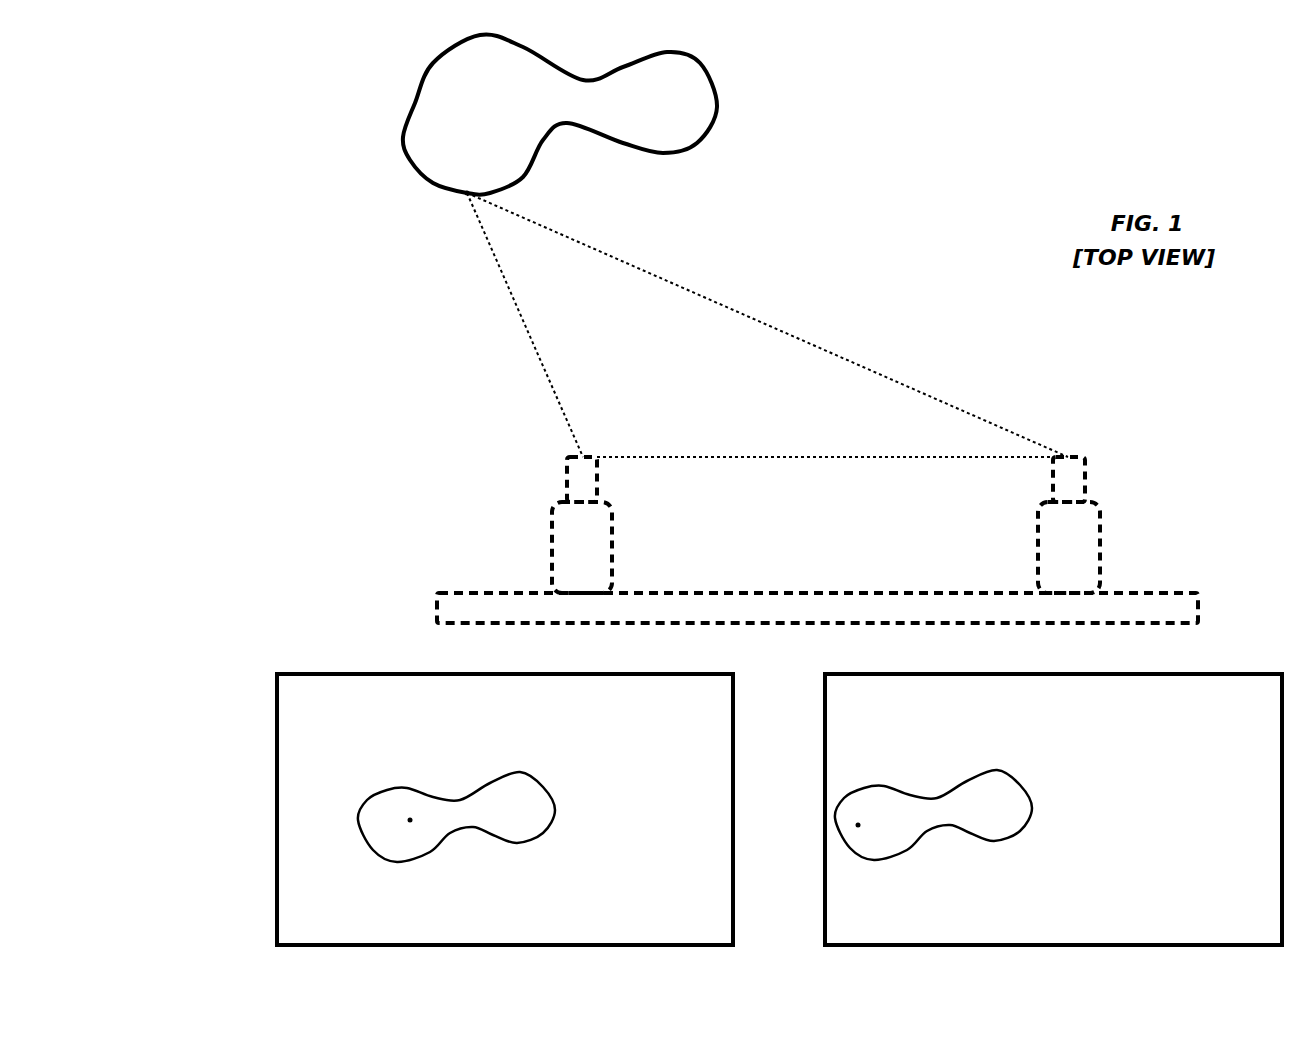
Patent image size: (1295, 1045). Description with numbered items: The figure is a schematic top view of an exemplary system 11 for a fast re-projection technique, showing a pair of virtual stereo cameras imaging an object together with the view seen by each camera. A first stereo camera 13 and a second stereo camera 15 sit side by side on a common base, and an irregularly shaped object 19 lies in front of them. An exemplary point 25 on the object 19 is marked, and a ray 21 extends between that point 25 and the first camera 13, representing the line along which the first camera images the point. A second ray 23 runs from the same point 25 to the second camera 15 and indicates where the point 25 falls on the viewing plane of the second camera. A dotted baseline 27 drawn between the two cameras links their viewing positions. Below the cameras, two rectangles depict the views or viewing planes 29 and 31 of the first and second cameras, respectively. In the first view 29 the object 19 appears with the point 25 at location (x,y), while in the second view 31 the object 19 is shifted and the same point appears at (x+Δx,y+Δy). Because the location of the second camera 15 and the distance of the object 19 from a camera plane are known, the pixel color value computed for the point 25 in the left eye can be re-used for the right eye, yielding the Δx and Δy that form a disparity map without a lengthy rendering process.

The system 11 is at (367, 340).
The first stereo camera 13 is at (610, 512).
The second stereo camera 15 is at (1097, 512).
The object 19 is at (695, 62).
The ray 21 is at (533, 352).
The ray 23 is at (925, 396).
The point 25 is at (462, 201).
The baseline between cameras 27 is at (795, 457).
The viewing plane 29 is at (404, 782).
The viewing plane 31 is at (939, 775).